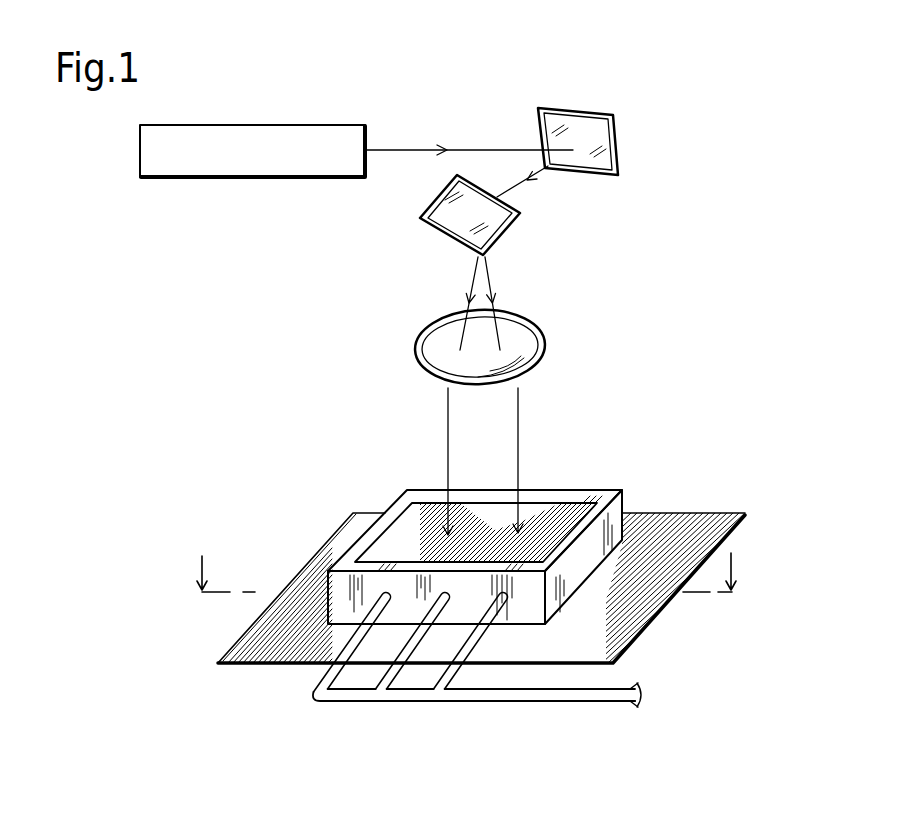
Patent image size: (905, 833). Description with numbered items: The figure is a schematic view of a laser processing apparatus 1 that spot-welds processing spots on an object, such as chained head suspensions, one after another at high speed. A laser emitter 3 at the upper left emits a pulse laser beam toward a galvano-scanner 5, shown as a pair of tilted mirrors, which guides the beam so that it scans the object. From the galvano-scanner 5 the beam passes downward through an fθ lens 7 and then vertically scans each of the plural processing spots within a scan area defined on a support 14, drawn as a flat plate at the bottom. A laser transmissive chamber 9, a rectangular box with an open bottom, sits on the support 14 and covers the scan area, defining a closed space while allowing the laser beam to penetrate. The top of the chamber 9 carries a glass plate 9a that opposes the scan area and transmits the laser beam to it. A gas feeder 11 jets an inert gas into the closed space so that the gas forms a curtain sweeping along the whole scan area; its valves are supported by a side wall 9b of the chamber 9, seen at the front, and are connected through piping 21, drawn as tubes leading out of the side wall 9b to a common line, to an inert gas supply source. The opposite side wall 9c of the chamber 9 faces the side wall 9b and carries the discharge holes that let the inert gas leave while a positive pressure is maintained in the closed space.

The laser processing apparatus 1 is at (642, 113).
The laser emitter 3 is at (247, 125).
The galvano-scanner 5 is at (520, 217).
The fθ lens 7 is at (545, 345).
The laser transmissive chamber 9 is at (627, 503).
The glass plate 9a is at (400, 537).
The side wall 9b is at (343, 598).
The side wall 9c is at (549, 490).
The gas feeder 11 is at (392, 703).
The support 14 is at (717, 513).
The piping 21 is at (467, 700).